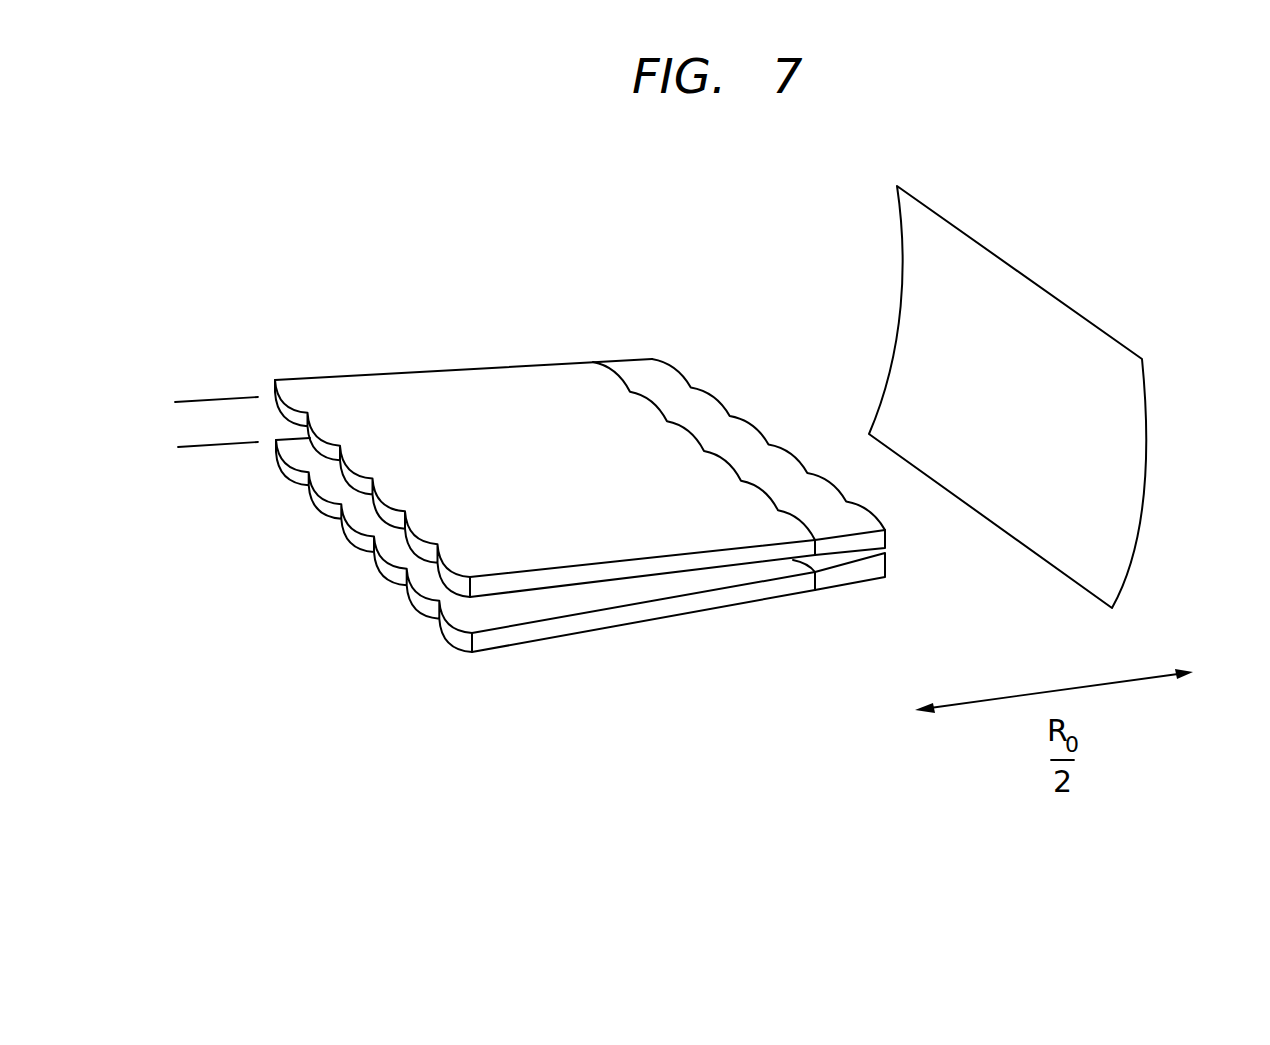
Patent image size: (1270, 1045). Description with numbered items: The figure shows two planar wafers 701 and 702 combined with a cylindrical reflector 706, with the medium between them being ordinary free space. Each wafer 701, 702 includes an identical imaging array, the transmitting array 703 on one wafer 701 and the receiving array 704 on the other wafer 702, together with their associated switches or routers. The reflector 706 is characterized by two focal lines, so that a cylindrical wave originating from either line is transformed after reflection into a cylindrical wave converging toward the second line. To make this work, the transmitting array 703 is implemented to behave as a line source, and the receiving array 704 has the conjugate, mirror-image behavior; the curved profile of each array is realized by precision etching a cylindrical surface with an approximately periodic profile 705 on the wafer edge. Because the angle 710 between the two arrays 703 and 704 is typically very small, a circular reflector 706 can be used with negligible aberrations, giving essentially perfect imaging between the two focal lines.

The wafer 701 is at (473, 398).
The wafer 702 is at (525, 635).
The transmitting array 703 is at (637, 373).
The receiving array 704 is at (852, 575).
The lenticular lens portion 705 is at (875, 323).
The cylindrical reflector 706 is at (1143, 487).
The angle 710 is at (212, 528).